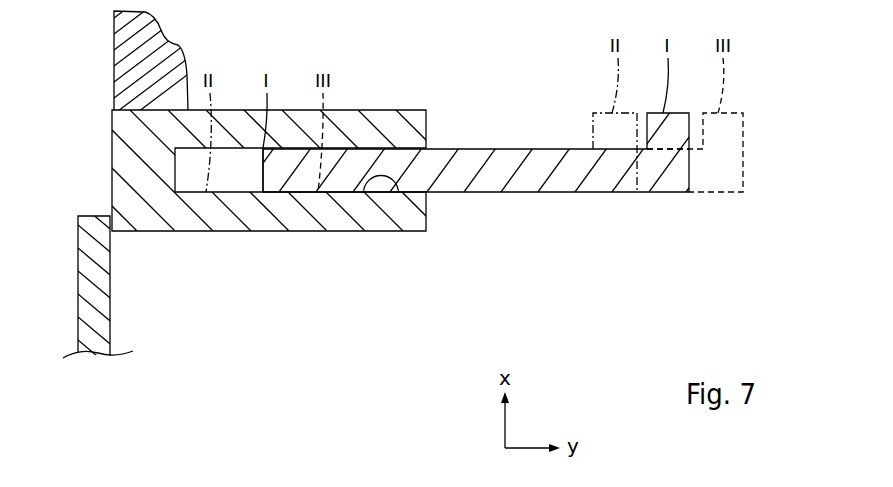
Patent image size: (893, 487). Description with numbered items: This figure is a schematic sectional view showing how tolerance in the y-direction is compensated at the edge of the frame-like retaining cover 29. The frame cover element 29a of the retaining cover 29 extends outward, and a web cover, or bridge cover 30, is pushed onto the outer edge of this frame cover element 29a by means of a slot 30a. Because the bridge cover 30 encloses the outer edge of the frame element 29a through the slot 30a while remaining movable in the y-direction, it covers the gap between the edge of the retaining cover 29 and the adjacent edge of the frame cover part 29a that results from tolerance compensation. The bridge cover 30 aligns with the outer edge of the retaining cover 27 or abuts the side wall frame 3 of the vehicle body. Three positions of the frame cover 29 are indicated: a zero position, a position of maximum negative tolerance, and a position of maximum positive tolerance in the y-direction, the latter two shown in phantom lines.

The retaining cover 27 is at (128, 80).
The side wall frame 3 is at (92, 276).
The web cover (bridge cover) 30 is at (270, 245).
The slot 30a is at (399, 193).
The retaining cover (frame cover) 29 is at (503, 208).
The frame cover element 29a is at (557, 196).